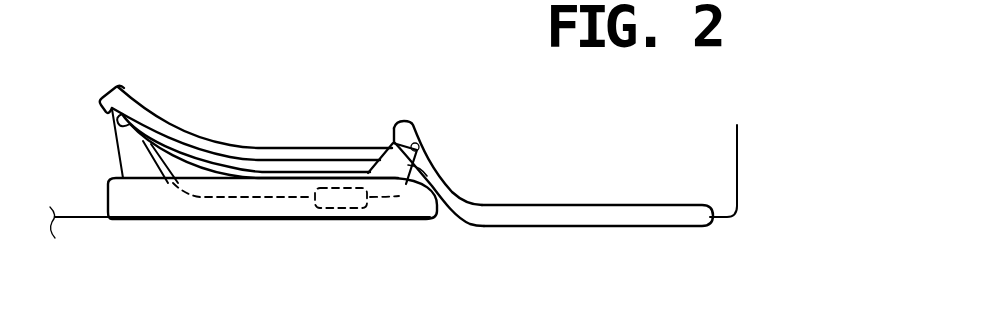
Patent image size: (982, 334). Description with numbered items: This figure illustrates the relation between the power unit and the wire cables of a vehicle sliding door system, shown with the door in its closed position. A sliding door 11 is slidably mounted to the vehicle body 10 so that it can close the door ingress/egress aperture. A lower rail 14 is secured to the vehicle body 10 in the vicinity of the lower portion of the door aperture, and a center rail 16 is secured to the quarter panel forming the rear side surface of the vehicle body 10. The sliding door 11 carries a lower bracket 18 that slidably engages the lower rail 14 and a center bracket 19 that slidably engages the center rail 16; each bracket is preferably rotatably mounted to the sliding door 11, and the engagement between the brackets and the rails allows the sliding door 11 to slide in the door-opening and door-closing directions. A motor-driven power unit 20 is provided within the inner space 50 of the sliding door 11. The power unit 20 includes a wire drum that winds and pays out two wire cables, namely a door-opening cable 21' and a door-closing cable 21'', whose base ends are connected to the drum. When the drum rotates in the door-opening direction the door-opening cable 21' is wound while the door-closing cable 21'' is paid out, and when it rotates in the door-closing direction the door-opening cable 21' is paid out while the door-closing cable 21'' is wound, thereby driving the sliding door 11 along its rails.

The vehicle body 10 is at (73, 220).
The sliding door 11 is at (165, 207).
The lower rail 14 is at (298, 148).
The center rail 16 is at (622, 218).
The lower bracket 18 is at (128, 153).
The center bracket 19 is at (396, 166).
The power unit 20 is at (342, 208).
The door-opening cable 21' is at (257, 116).
The door-closing cable 21'' is at (462, 173).
The inner space 50 is at (266, 206).